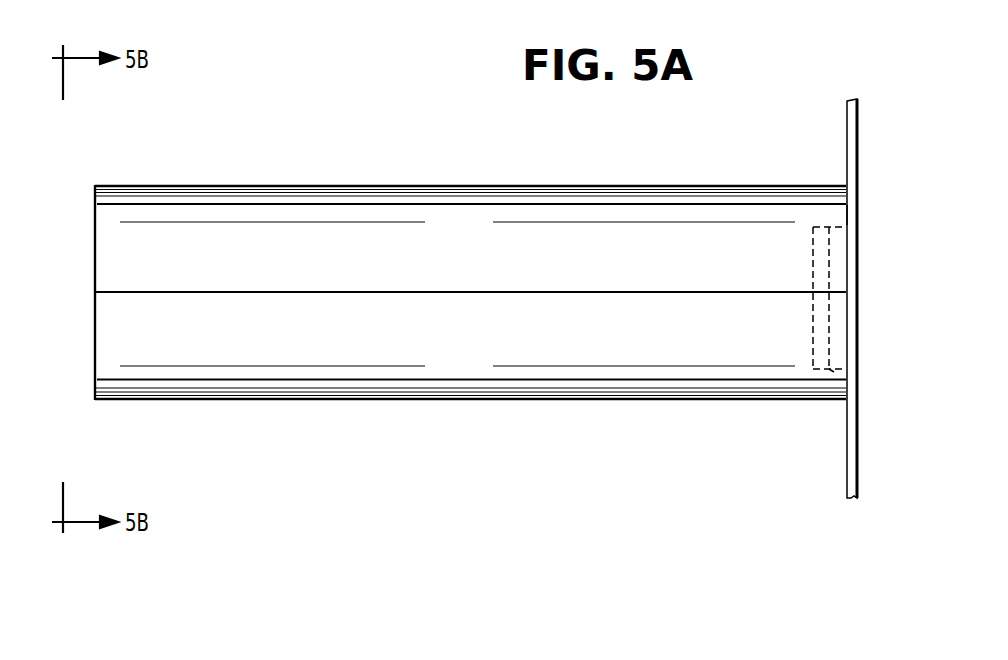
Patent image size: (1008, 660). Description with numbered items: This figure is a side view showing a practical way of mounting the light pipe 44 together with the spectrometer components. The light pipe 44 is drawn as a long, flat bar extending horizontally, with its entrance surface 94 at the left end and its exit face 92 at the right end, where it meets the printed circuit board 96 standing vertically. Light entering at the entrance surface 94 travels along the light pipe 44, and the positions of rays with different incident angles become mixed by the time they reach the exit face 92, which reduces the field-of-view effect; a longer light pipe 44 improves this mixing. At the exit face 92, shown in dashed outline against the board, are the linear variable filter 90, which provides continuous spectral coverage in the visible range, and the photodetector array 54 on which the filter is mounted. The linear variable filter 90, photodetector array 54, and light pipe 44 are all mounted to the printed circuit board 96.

The light pipe 44 is at (403, 186).
The photodetector array 54 is at (834, 372).
The linear variable filter 90 is at (818, 224).
The exit face 92 is at (848, 214).
The entrance surface 94 is at (94, 251).
The printed circuit board 96 is at (852, 99).